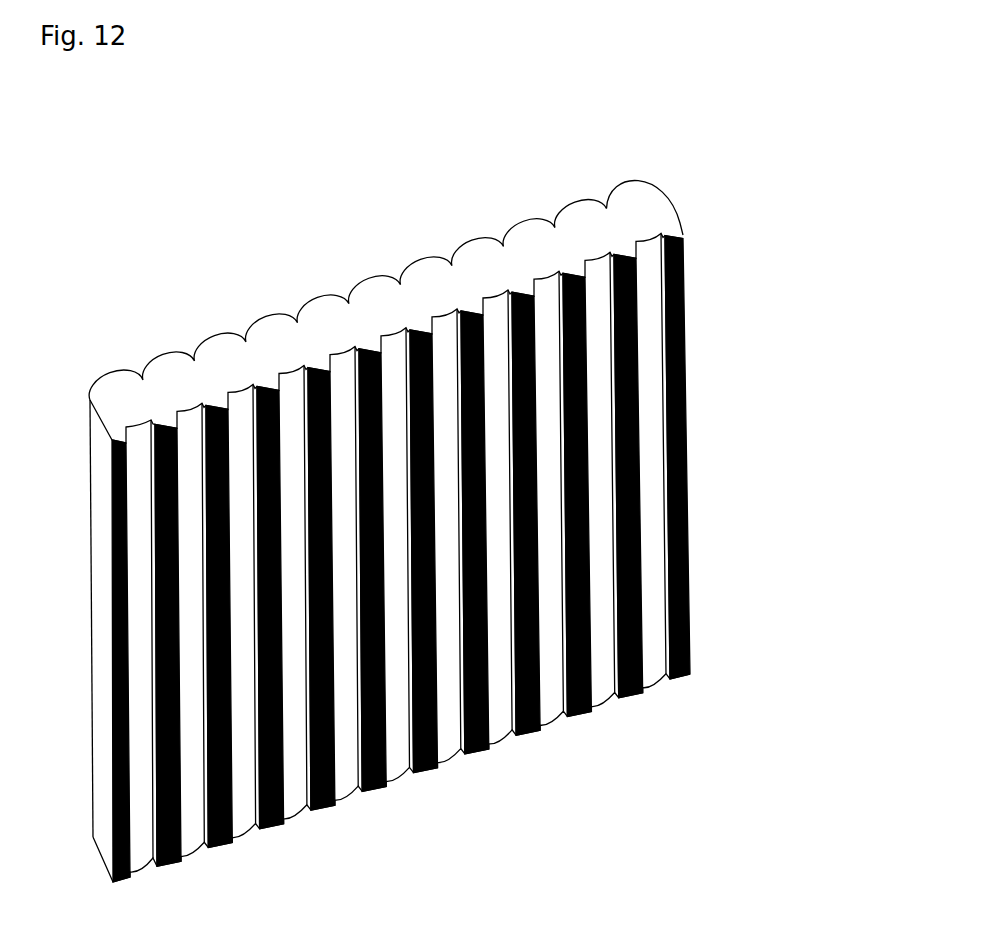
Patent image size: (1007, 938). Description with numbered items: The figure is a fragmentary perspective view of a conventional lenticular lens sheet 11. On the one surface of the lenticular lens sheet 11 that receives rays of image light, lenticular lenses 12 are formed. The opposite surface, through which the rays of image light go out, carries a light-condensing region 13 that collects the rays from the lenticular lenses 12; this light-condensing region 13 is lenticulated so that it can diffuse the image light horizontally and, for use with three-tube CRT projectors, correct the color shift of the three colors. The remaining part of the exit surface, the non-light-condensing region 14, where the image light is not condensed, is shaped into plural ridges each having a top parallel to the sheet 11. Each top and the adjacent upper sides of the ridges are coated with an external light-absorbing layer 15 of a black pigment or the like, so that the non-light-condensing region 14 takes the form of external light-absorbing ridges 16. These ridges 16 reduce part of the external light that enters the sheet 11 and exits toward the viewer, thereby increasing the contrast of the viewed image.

The lenticular lens sheet 11 is at (382, 315).
The lenticular lenses 12 is at (635, 193).
The light-condensing region 13 is at (647, 238).
The non-light-condensing region 14 is at (627, 256).
The external light-absorbing layer 15 is at (637, 300).
The external light-absorbing ridges 16 is at (850, 254).